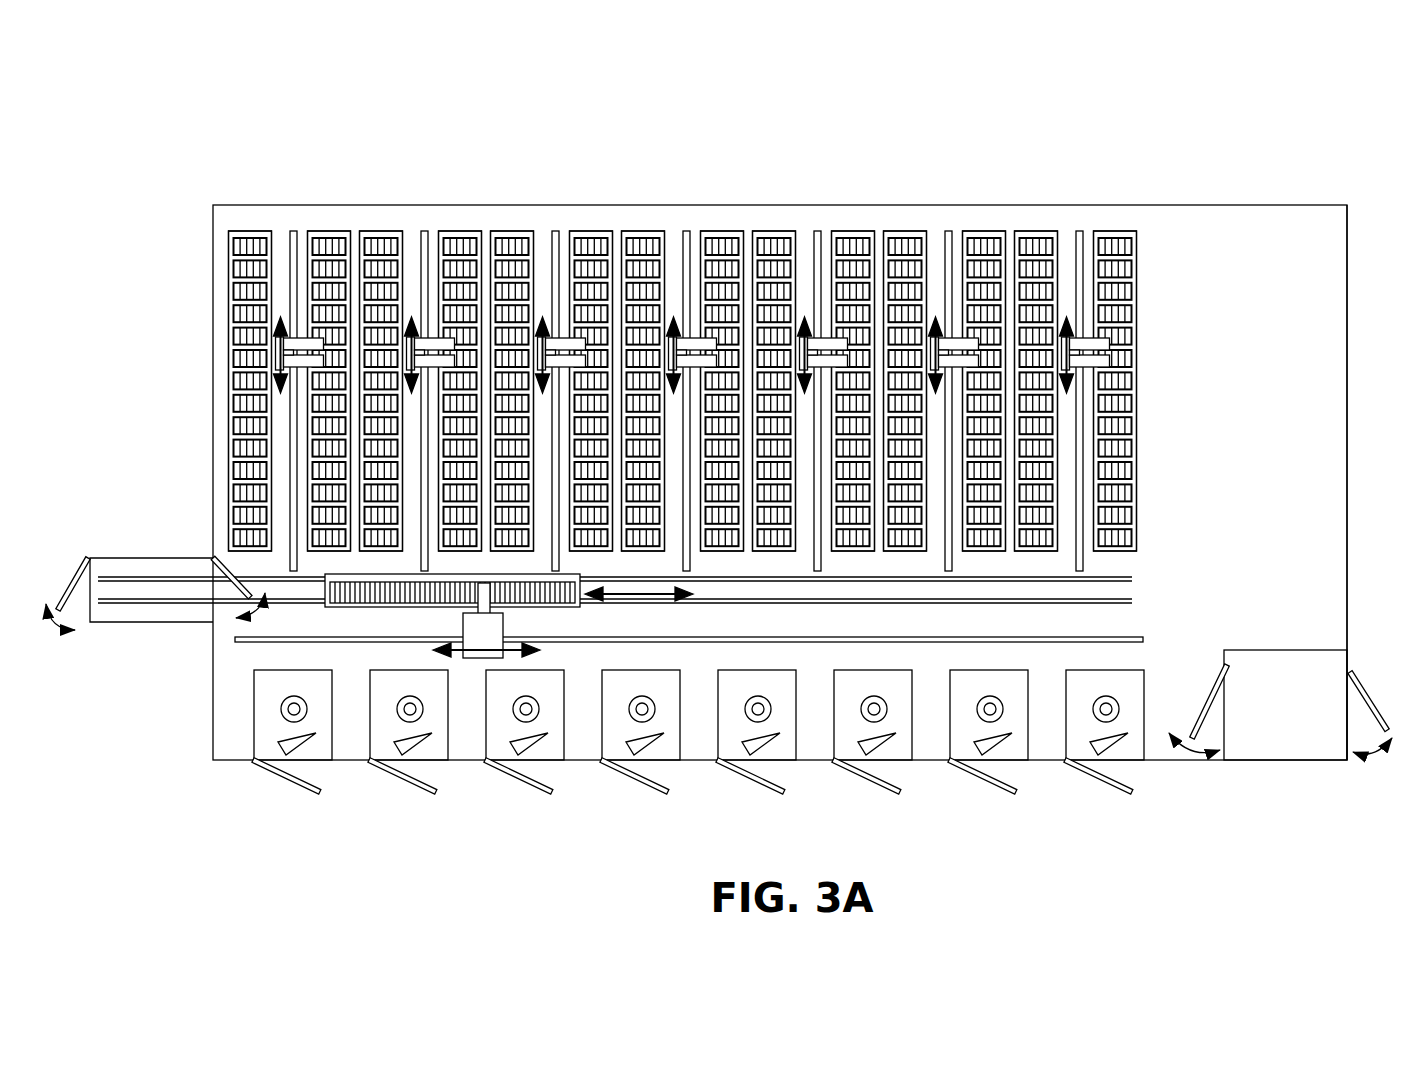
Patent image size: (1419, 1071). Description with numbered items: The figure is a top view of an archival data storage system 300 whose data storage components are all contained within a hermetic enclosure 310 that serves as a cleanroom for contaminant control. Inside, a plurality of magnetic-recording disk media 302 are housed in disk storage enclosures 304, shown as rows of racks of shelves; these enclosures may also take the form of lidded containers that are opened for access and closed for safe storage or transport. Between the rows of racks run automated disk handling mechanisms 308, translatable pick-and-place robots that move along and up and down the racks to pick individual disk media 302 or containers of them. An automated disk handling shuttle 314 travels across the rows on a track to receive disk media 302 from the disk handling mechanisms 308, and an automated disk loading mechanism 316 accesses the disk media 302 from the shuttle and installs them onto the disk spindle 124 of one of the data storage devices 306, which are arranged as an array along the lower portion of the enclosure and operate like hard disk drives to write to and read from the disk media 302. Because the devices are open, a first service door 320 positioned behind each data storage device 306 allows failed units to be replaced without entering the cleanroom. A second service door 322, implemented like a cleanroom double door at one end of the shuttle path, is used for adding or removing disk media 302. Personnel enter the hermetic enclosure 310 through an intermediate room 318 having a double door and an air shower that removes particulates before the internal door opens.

The data storage system 300 is at (231, 101).
The magnetic-recording disk media 302 is at (251, 230).
The disk storage enclosure 304 is at (228, 247).
The data storage device 306 is at (312, 748).
The automated disk handling mechanism 308 is at (300, 345).
The hermetic enclosure 310 is at (1347, 432).
The automated disk handling shuttle 314 is at (325, 575).
The automated disk loading mechanism 316 is at (463, 630).
The intermediate room 318 is at (1318, 695).
The first service door 320 is at (401, 786).
The second service door 322 is at (74, 570).
The disk spindle 124 is at (281, 705).